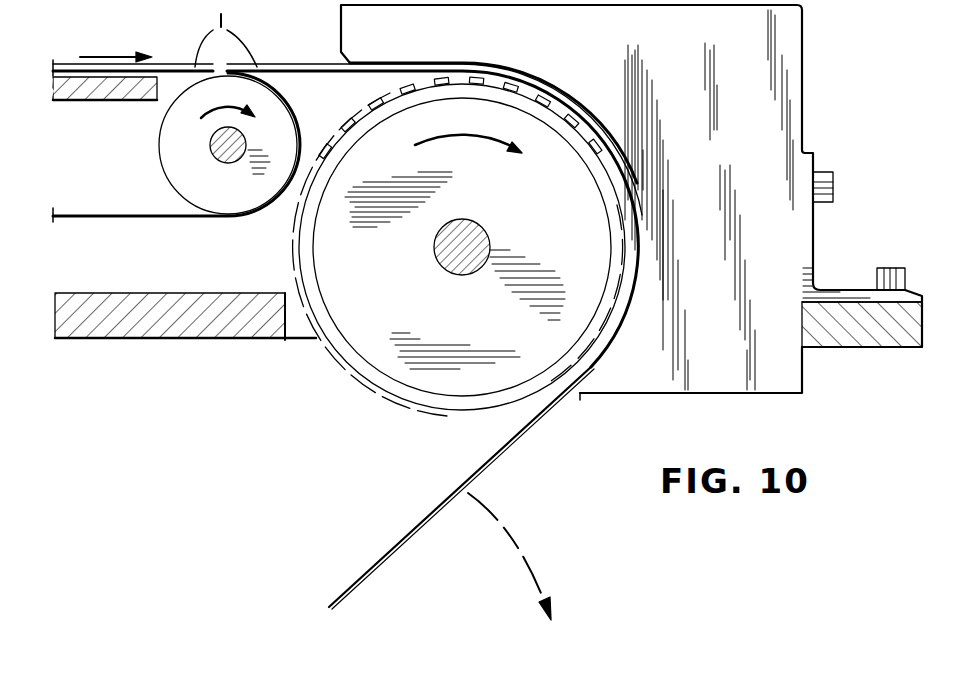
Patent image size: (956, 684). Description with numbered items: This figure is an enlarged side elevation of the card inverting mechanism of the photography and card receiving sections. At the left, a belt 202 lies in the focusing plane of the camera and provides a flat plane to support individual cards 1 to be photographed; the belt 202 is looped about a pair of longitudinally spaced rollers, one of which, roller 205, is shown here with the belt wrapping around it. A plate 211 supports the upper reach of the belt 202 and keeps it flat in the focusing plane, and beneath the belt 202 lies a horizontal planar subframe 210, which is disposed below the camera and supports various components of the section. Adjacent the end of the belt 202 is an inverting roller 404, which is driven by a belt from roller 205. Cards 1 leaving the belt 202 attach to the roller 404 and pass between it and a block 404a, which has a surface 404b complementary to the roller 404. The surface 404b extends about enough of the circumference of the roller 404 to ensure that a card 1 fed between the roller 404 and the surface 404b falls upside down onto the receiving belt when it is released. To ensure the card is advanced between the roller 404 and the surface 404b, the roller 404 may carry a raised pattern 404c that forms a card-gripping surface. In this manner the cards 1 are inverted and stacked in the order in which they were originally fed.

The card 1 is at (378, 552).
The belt 202 is at (125, 216).
The roller 205 is at (175, 152).
The horizontal planar subframe 210 is at (203, 328).
The plate 211 is at (103, 102).
The inverting roller 404 is at (385, 348).
The block 404a is at (787, 72).
The surface 404b is at (628, 187).
The raised pattern 404c is at (392, 90).